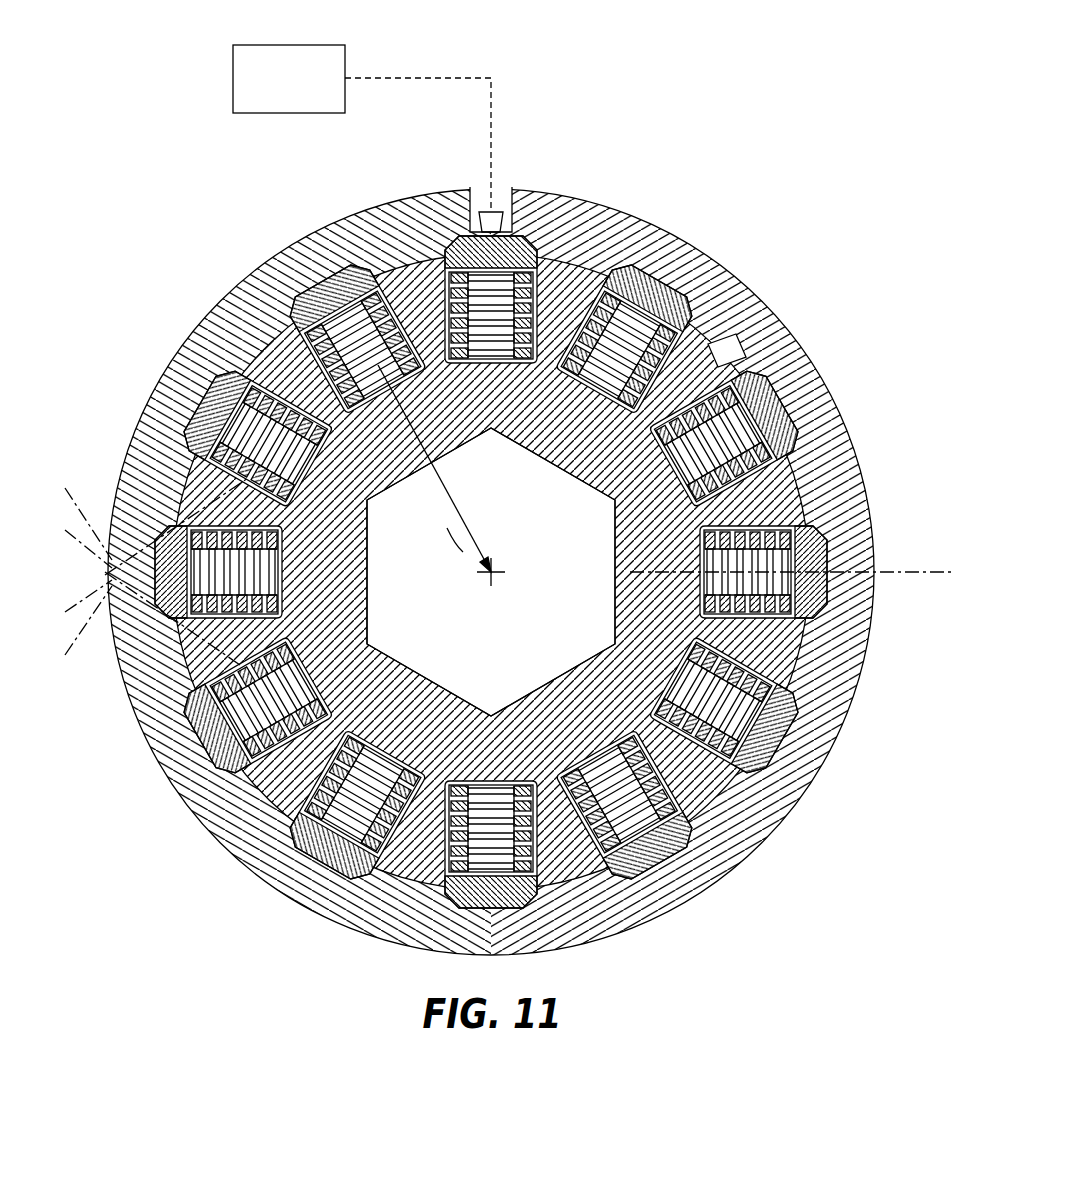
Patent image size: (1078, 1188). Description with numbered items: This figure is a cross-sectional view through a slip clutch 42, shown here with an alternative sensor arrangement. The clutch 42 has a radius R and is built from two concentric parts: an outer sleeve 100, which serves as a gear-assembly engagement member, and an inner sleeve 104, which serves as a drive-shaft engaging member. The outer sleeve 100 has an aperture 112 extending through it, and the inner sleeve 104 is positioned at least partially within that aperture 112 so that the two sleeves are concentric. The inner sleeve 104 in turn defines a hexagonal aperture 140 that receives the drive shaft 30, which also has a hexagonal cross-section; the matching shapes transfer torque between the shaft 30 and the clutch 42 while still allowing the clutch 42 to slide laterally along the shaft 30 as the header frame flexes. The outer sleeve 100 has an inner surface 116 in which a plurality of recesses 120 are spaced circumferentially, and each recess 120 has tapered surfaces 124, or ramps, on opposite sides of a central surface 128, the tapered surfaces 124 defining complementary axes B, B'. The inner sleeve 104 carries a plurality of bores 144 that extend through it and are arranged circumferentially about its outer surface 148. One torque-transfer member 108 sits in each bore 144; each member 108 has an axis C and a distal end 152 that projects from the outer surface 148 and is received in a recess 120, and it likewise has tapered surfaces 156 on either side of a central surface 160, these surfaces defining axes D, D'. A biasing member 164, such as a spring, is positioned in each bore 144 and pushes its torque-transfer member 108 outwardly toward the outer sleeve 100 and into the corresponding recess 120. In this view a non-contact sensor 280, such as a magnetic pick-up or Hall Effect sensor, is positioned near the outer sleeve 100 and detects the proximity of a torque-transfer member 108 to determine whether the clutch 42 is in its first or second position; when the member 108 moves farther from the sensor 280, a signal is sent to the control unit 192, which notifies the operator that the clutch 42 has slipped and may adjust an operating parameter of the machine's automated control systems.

The slip clutch 42 is at (178, 171).
The control unit 192 is at (362, 127).
The sensor 280 is at (503, 212).
The central surface 160 is at (468, 238).
The tapered surfaces 156 is at (455, 250).
The distal end 152 is at (445, 270).
The aperture 140 is at (313, 258).
The aperture 112 is at (290, 318).
The torque-transfer member 108 is at (628, 268).
The biasing member 164 is at (688, 282).
The outer sleeve 100 is at (705, 352).
The inner surface 116 is at (740, 348).
The tapered surfaces 124 is at (762, 378).
The recesses 120 is at (775, 390).
The central surface 128 is at (805, 400).
The inner sleeve 104 is at (778, 498).
The bores 144 is at (815, 690).
The outer surface 148 is at (768, 812).
The drive shaft 30 is at (515, 617).
The radius R is at (434, 468).
The axis C is at (897, 574).
The axis D is at (142, 572).
The axis B is at (74, 570).